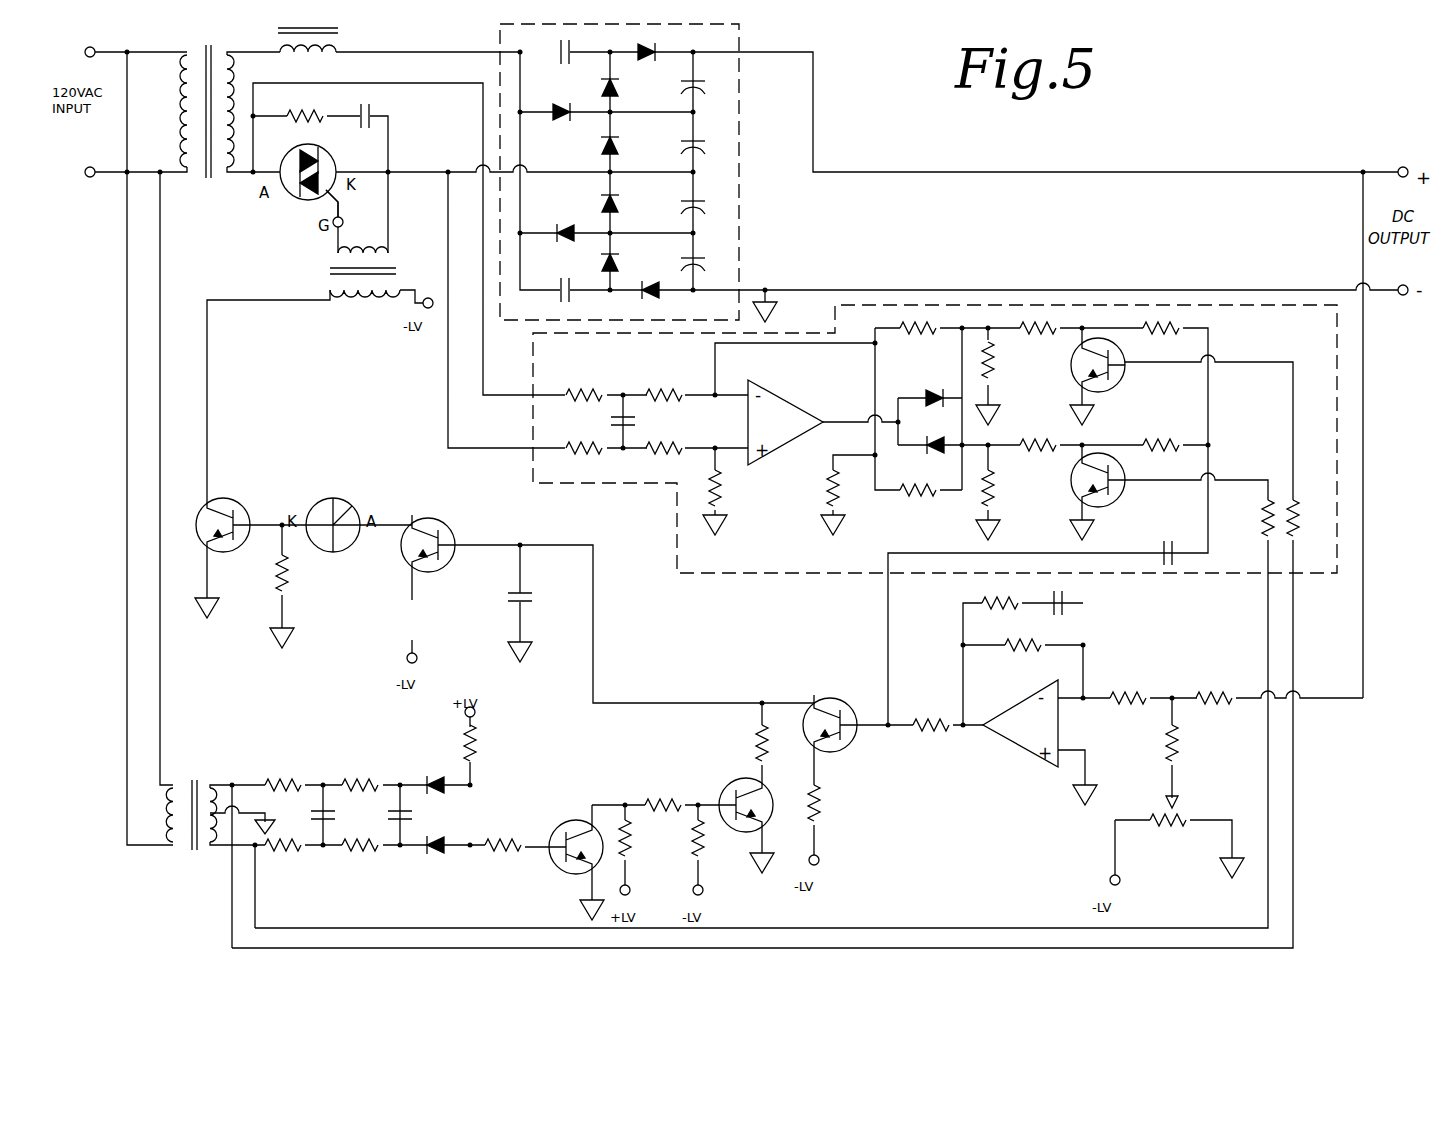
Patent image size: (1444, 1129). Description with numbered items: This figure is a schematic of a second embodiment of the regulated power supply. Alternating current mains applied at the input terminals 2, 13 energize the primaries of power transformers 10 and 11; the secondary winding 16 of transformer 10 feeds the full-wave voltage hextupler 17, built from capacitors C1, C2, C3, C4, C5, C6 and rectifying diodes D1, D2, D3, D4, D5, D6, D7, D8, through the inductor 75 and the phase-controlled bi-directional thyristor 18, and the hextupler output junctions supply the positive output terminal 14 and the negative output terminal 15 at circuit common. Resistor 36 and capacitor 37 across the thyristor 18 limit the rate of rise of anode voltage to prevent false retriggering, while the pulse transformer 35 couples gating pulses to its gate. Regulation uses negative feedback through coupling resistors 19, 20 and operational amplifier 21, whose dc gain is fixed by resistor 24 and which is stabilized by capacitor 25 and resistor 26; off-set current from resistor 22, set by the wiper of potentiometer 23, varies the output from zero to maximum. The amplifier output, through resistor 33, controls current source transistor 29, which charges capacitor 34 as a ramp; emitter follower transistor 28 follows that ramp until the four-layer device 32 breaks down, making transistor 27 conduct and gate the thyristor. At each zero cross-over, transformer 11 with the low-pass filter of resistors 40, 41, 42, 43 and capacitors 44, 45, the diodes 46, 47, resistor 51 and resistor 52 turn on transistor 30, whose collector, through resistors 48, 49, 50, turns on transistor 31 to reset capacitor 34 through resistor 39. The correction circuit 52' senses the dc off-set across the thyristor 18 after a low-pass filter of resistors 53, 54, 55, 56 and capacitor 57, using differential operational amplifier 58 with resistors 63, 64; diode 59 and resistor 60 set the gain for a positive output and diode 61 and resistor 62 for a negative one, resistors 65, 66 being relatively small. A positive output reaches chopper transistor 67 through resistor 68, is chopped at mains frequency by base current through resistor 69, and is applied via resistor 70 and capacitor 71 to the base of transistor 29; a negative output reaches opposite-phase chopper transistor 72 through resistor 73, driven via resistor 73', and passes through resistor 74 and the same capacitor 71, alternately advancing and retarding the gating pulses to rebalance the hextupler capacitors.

The circuit input terminal 2 is at (85, 53).
The circuit input terminal 13 is at (90, 178).
The power transformer 10 is at (206, 52).
The secondary winding 16 is at (234, 100).
The inductor 75 is at (338, 32).
The voltage multiplier 17 is at (500, 38).
The resistor 36 is at (304, 116).
The capacitor 37 is at (373, 114).
The bi-directional thyristor 18 is at (288, 206).
The pulse transformer 35 is at (320, 274).
The positive output terminal 14 is at (1403, 170).
The negative output terminal 15 is at (1404, 296).
The correction circuit 52' is at (935, 462).
The resistor 53 is at (582, 390).
The resistor 55 is at (672, 391).
The resistor 54 is at (582, 446).
The capacitor 57 is at (638, 424).
The resistor 56 is at (678, 448).
The operational amplifier 58 is at (812, 384).
The resistor 63 is at (724, 494).
The resistor 64 is at (828, 490).
The resistor 60 is at (925, 338).
The diode 59 is at (928, 396).
The diode 61 is at (936, 440).
The resistor 62 is at (926, 508).
The resistor 66 is at (990, 372).
The resistor 68 is at (1032, 338).
The transistor 67 is at (1072, 382).
The resistor 70 is at (1160, 338).
The resistor 73 is at (1038, 432).
The resistor 74 is at (1170, 442).
The resistor 65 is at (995, 493).
The transistor 72 is at (1073, 496).
The capacitor 71 is at (1174, 527).
The resistor 73' is at (1250, 518).
The resistor 69 is at (1294, 524).
The transistor 27 is at (196, 524).
The four-layer device 32 is at (342, 564).
The transistor 28 is at (436, 577).
The capacitor 34 is at (530, 600).
The current source transistor 29 is at (826, 700).
The resistor 39 is at (756, 746).
The transistor 31 is at (734, 786).
The resistor 49 is at (660, 802).
The resistor 48 is at (633, 845).
The resistor 50 is at (690, 856).
The transistor 30 is at (562, 820).
The power transformer 11 is at (192, 784).
The resistor 40 is at (296, 776).
The resistor 41 is at (372, 776).
The diode 46 is at (442, 774).
The resistor 51 is at (472, 744).
The capacitor 44 is at (328, 815).
The capacitor 45 is at (393, 824).
The resistor 42 is at (288, 854).
The resistor 43 is at (372, 854).
The diode 47 is at (439, 856).
The resistor 52 is at (506, 866).
The capacitor 25 is at (1060, 598).
The resistor 26 is at (1002, 609).
The resistor 24 is at (1016, 650).
The coupling resistor 20 is at (1142, 694).
The coupling resistor 19 is at (1224, 694).
The resistor 33 is at (928, 730).
The operational amplifier 21 is at (1013, 759).
The resistor 22 is at (1180, 758).
The potentiometer 23 is at (1167, 831).
The capacitor C1 is at (580, 50).
The capacitor C2 is at (703, 95).
The capacitor C3 is at (703, 153).
The capacitor C4 is at (703, 213).
The capacitor C5 is at (703, 269).
The capacitor C6 is at (577, 299).
The diode D1 is at (645, 46).
The diode D2 is at (626, 89).
The diode D3 is at (551, 103).
The diode D4 is at (626, 148).
The diode D5 is at (625, 204).
The diode D6 is at (559, 224).
The diode D7 is at (625, 261).
The diode D8 is at (661, 300).